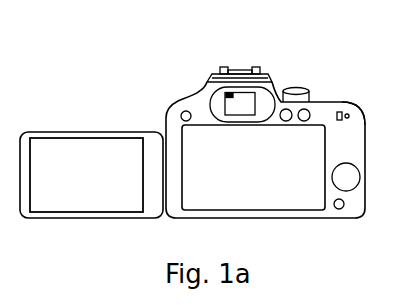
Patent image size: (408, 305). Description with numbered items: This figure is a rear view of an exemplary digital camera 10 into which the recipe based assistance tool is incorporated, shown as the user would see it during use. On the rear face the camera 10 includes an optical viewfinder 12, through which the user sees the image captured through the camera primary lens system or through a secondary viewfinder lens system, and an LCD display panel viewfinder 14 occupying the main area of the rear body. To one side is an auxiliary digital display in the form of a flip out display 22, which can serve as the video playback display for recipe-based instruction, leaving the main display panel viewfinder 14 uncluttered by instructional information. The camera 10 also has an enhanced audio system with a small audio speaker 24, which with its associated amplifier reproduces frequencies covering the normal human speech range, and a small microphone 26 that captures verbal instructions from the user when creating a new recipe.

The camera 10 is at (226, 36).
The optical viewfinder 12 is at (226, 95).
The LCD display panel viewfinder 14 is at (272, 183).
The flip out display 22 is at (96, 198).
The audio speaker 24 is at (340, 111).
The microphone 26 is at (365, 118).